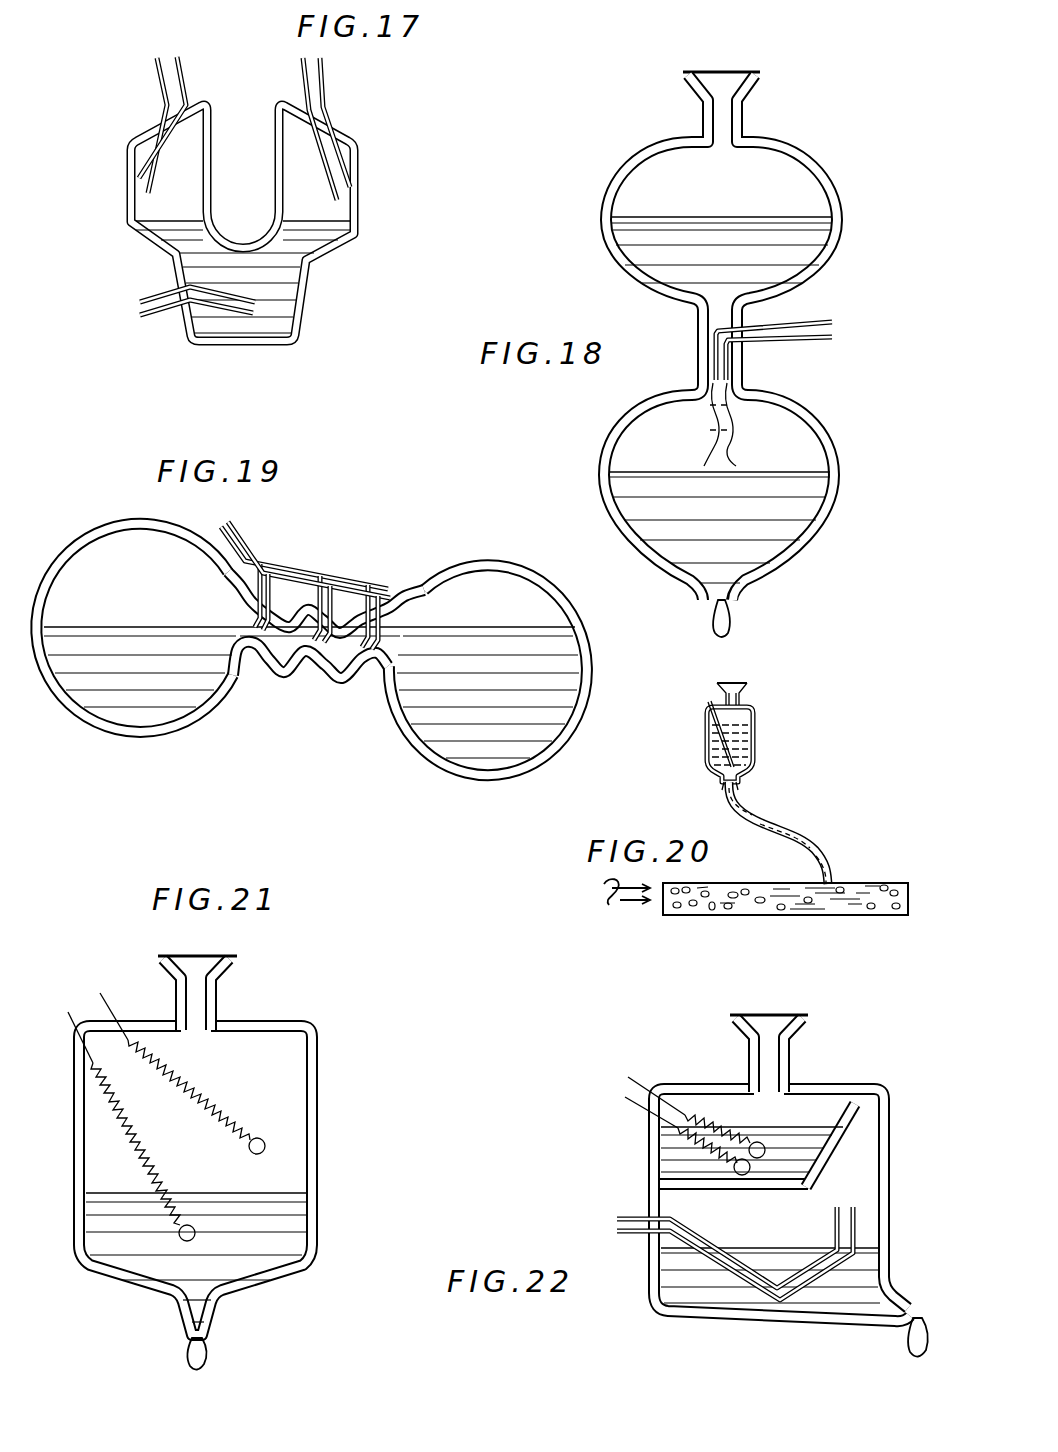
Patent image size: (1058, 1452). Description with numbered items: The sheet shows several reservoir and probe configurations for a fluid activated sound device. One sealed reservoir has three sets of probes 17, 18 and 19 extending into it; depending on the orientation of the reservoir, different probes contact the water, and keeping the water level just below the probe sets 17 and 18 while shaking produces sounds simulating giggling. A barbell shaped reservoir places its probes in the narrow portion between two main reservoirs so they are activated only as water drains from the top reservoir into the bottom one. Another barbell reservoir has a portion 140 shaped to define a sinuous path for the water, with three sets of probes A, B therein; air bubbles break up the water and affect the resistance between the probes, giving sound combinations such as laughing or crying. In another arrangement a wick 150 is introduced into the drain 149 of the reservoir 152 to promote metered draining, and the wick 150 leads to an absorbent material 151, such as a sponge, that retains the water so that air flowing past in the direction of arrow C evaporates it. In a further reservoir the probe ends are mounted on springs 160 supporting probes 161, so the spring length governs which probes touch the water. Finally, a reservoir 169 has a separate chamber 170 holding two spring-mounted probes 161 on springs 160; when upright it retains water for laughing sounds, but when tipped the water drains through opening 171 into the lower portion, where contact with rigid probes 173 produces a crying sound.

In FIG. 17, the probe set 17 is at (167, 57).
In FIG. 17, the probe set 18 is at (310, 52).
In FIG. 17, the probe set 19 is at (140, 306).
In FIG. 18, the probe A is at (832, 322).
In FIG. 19, the probe A is at (219, 528).
In FIG. 18, the probe B is at (833, 339).
In FIG. 19, the probe B is at (236, 523).
In FIG. 19, the portion 140 is at (295, 656).
In FIG. 20, the supply bottle 152 is at (755, 723).
In FIG. 20, the drain 149 is at (740, 781).
In FIG. 20, the wick 150 is at (808, 833).
In FIG. 20, the absorbent material 151 is at (907, 884).
In FIG. 20, the arrow C is at (618, 893).
In FIG. 21, the springs 160 is at (200, 1092).
In FIG. 22, the springs 160 is at (718, 1128).
In FIG. 21, the probes 161 is at (259, 1154).
In FIG. 22, the probes 161 is at (765, 1140).
In FIG. 22, the reservoir 169 is at (708, 1083).
In FIG. 22, the opening 171 is at (877, 1088).
In FIG. 22, the chamber 170 is at (670, 1157).
In FIG. 22, the probes 173 is at (617, 1226).